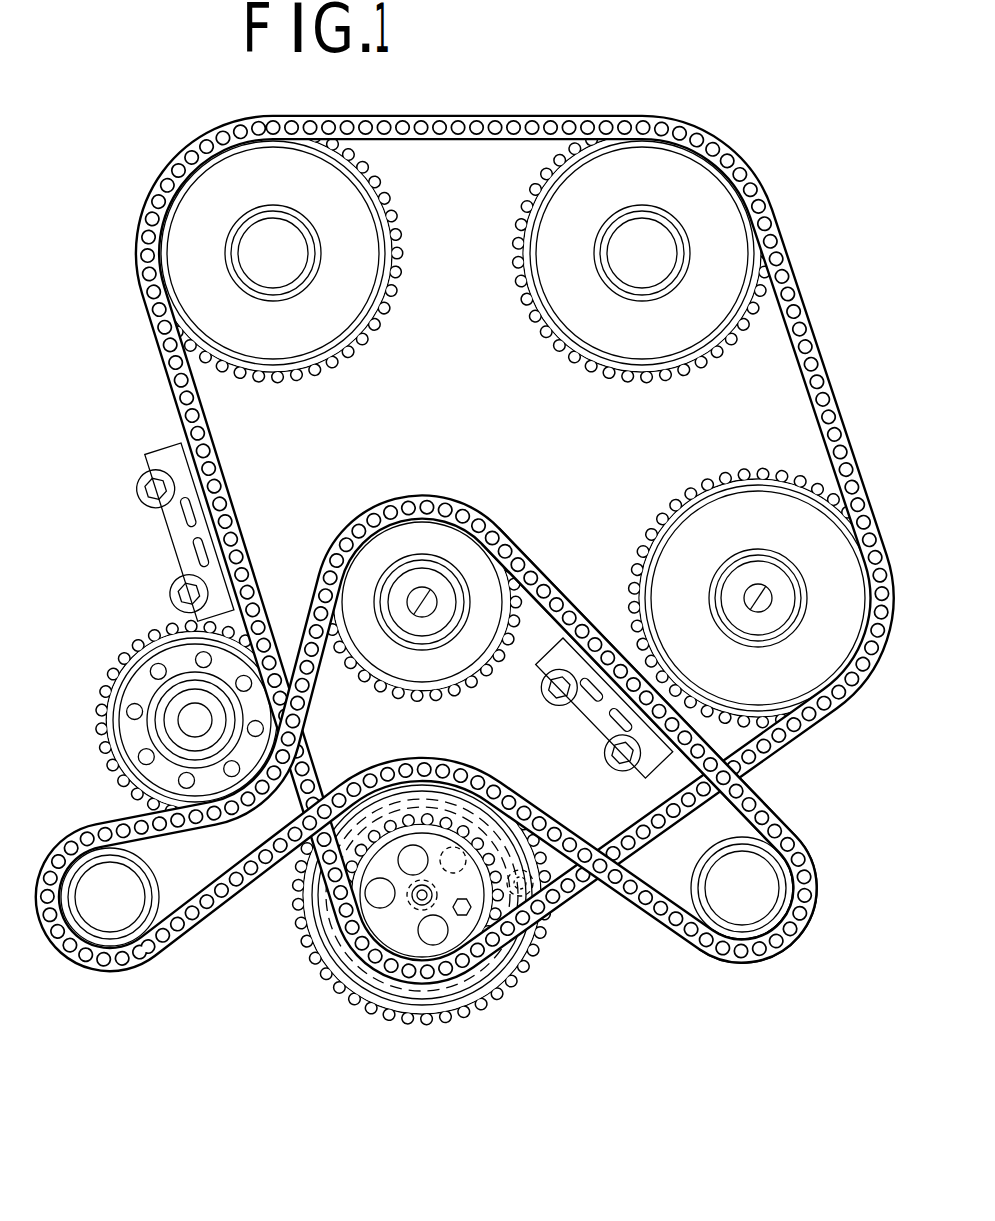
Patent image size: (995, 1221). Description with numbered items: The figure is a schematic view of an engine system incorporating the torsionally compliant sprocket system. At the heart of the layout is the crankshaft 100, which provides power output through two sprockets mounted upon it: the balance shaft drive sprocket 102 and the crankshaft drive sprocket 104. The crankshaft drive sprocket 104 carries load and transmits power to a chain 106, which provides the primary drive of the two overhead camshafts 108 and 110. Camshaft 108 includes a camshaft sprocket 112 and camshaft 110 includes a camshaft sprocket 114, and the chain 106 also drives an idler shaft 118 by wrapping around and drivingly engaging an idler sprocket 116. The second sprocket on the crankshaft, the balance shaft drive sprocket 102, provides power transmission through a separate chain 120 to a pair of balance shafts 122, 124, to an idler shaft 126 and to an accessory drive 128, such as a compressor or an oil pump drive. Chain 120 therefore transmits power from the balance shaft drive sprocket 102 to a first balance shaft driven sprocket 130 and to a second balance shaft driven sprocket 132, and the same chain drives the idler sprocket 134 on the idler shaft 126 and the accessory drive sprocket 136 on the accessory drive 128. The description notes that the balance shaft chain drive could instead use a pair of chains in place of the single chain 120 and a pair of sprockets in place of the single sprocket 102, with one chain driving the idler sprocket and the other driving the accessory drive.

The crankshaft 100 is at (402, 910).
The balance shaft drive sprocket 102 is at (438, 1040).
The crankshaft drive sprocket 104 is at (378, 972).
The chain 106 is at (160, 386).
The camshaft 108 is at (274, 252).
The camshaft 110 is at (640, 250).
The camshaft sprocket 112 is at (402, 205).
The camshaft sprocket 114 is at (723, 370).
The idler sprocket 116 is at (688, 472).
The idler shaft 118 is at (738, 584).
The chain 120 is at (756, 804).
The balance shaft 122 is at (108, 904).
The balance shaft 124 is at (754, 877).
The idler shaft 126 is at (426, 576).
The accessory drive 128 is at (186, 748).
The first balance shaft driven sprocket 130 is at (700, 966).
The second balance shaft driven sprocket 132 is at (58, 834).
The idler sprocket 134 is at (442, 714).
The accessory drive sprocket 136 is at (126, 638).